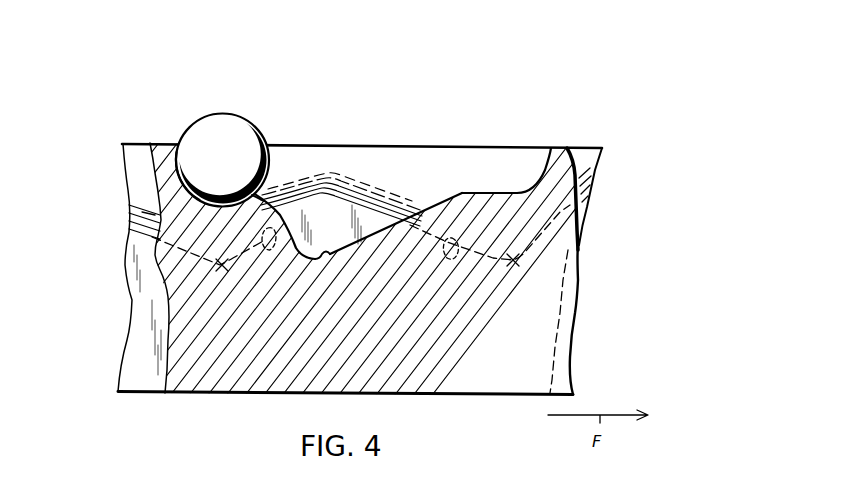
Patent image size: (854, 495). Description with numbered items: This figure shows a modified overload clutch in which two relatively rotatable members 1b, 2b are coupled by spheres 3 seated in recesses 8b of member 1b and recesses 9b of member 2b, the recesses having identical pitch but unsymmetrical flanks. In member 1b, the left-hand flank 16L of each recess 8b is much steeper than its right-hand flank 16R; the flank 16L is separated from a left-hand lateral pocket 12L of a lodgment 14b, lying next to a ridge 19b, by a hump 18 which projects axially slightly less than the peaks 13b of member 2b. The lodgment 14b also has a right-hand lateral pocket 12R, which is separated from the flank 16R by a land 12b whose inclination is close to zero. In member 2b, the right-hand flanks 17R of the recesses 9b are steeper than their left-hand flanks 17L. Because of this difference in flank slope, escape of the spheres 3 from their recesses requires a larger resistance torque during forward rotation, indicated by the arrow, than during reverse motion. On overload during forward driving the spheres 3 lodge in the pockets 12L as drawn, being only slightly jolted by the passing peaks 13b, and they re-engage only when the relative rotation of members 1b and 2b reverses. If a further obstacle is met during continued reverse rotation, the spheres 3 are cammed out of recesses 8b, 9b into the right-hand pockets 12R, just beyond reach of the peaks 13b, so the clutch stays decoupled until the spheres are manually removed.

The member 1b is at (577, 305).
The member 2b is at (130, 308).
The spheres 3 is at (225, 122).
The recesses 8b is at (326, 258).
The recesses 9b is at (222, 268).
The lateral pocket 12L is at (178, 172).
The lateral pocket 12R is at (532, 180).
The land 12b is at (491, 192).
The peaks 13b is at (325, 192).
The lodgment 14b is at (377, 221).
The left-hand flank 16L is at (297, 245).
The right-hand flank 16R is at (425, 220).
The left-hand flank 17L is at (449, 258).
The right-hand flank 17R is at (271, 252).
The hump 18 is at (270, 198).
The ridge 19b is at (557, 151).